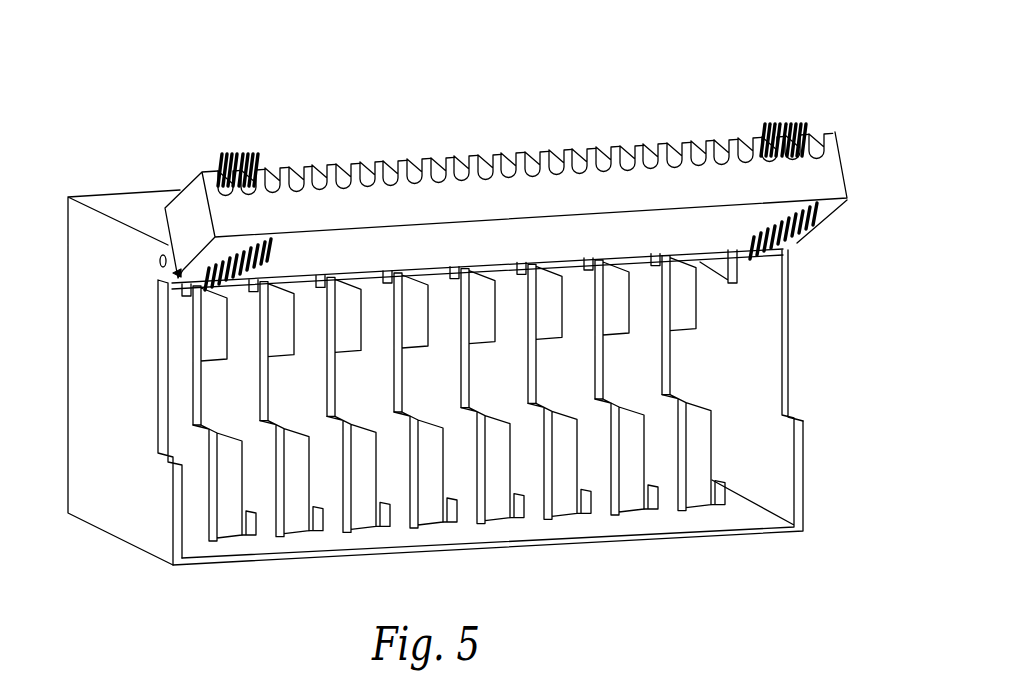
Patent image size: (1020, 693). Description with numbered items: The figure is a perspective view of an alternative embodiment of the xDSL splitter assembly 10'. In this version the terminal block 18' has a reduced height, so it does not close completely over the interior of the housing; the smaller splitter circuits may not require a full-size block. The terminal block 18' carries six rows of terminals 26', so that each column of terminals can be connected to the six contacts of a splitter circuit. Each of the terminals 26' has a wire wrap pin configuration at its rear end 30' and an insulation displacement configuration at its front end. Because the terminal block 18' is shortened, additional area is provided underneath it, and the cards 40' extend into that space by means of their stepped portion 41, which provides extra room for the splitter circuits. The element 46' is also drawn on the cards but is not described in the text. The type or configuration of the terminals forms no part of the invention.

The assembly 10' is at (435, 430).
The terminal block 18' is at (540, 205).
The terminals 26' is at (513, 101).
The rear end 30' is at (546, 246).
The cards 40' is at (462, 397).
The stepped portion 41 is at (665, 425).
The solder tail 46' is at (483, 555).